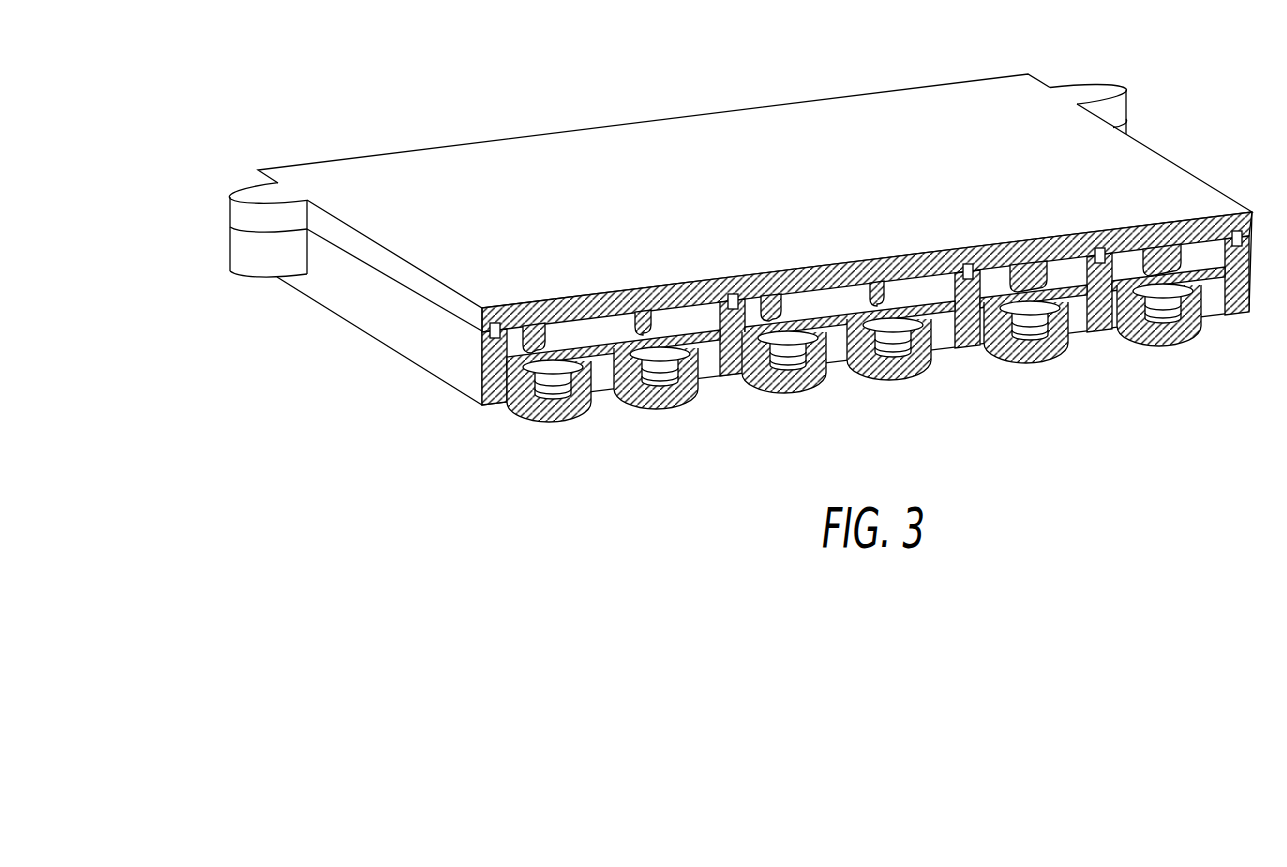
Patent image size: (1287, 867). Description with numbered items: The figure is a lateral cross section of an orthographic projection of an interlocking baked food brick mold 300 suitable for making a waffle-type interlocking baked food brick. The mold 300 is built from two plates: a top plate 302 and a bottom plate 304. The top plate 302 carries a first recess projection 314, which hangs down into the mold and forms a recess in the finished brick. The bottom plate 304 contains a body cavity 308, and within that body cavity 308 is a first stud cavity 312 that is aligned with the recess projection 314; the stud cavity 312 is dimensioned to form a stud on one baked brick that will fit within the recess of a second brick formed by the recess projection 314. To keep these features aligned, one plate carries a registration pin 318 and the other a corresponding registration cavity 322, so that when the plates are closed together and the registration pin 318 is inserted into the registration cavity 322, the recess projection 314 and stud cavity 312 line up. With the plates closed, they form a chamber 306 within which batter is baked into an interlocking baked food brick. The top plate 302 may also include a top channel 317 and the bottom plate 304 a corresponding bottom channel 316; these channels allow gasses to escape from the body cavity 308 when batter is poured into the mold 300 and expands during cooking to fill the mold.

The interlocking baked food brick mold 300 is at (476, 79).
The top plate 302 is at (397, 153).
The bottom plate 304 is at (407, 333).
The chamber 306 is at (538, 378).
The body cavity 308 is at (608, 378).
The first stud cavity 312 is at (662, 372).
The first recess projection 314 is at (663, 330).
The bottom channel 316 is at (743, 320).
The top channel 317 is at (732, 297).
The registration pin 318 is at (237, 213).
The registration cavity 322 is at (240, 248).